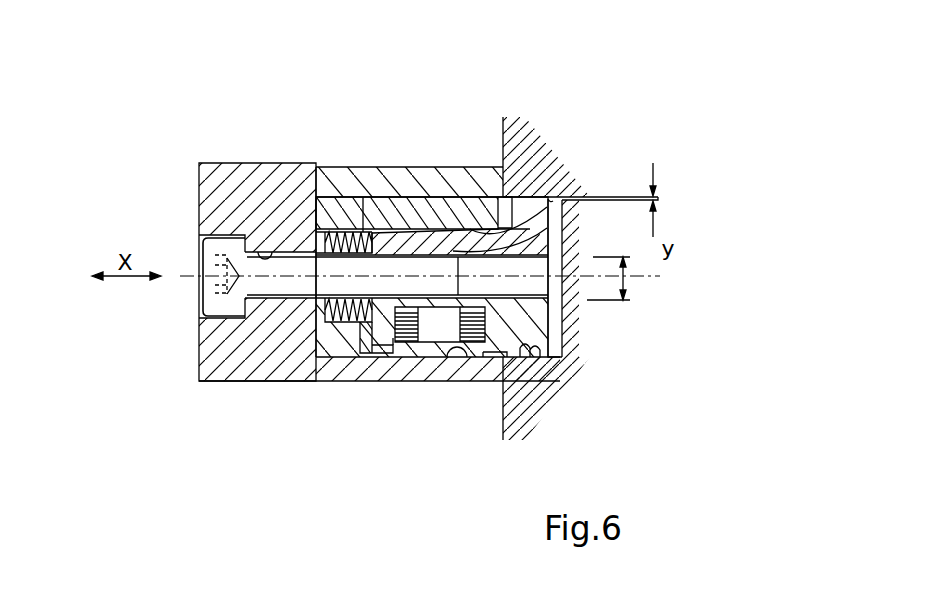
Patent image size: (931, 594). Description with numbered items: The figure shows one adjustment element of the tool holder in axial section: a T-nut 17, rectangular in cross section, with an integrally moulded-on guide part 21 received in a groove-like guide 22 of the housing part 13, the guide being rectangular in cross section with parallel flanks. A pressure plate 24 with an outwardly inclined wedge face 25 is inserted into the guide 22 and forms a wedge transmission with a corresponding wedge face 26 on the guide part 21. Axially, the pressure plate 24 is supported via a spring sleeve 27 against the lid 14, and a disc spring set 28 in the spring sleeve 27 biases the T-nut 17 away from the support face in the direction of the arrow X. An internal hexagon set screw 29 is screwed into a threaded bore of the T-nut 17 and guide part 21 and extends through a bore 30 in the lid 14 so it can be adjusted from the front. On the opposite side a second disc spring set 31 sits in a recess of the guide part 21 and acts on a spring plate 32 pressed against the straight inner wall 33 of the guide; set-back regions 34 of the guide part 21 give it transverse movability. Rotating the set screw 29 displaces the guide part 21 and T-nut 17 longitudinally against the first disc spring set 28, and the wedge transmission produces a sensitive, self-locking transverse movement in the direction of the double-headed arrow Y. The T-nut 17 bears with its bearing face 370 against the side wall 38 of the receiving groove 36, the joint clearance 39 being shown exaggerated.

The housing part 13 is at (437, 265).
The lid 14 is at (232, 177).
The T-nut 17 is at (522, 218).
The guide part 21 is at (378, 225).
The groove-like guide 22 is at (399, 197).
The pressure plate 24 is at (540, 190).
The wedge face 25 is at (433, 200).
The wedge face 26 is at (580, 197).
The spring sleeve 27 is at (290, 383).
The disc spring set 28 is at (303, 370).
The internal hexagon set screw 29 is at (217, 300).
The bore 30 is at (288, 240).
The second disc spring set 31 is at (372, 357).
The spring plate 32 is at (413, 347).
The straight inner wall 33 is at (452, 352).
The set-back regions 34 is at (503, 380).
The receiving groove 36 is at (556, 300).
The side wall 38 is at (563, 358).
The joint clearance 39 is at (658, 198).
The bearing face 370 is at (537, 357).